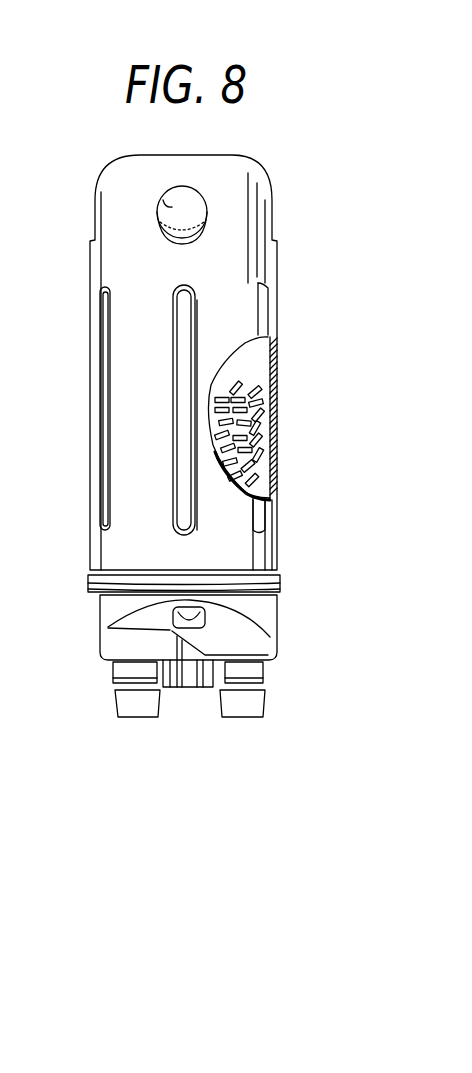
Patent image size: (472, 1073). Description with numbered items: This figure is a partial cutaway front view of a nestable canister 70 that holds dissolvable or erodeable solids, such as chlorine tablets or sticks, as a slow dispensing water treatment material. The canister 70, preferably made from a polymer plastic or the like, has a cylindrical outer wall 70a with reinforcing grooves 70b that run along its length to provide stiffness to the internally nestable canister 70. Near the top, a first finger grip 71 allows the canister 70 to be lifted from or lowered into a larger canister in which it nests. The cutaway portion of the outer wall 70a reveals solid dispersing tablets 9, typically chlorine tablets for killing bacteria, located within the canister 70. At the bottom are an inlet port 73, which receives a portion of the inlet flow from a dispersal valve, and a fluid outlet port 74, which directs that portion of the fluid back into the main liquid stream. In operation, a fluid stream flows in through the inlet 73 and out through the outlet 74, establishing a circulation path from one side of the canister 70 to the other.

The nestable canister 70 is at (281, 243).
The cylindrical outer wall 70a is at (280, 347).
The reinforcing grooves 70b is at (182, 348).
The first finger grip 71 is at (163, 205).
The solid dispersing tablets 9 is at (237, 380).
The inlet port 73 is at (250, 702).
The fluid outlet port 74 is at (128, 703).